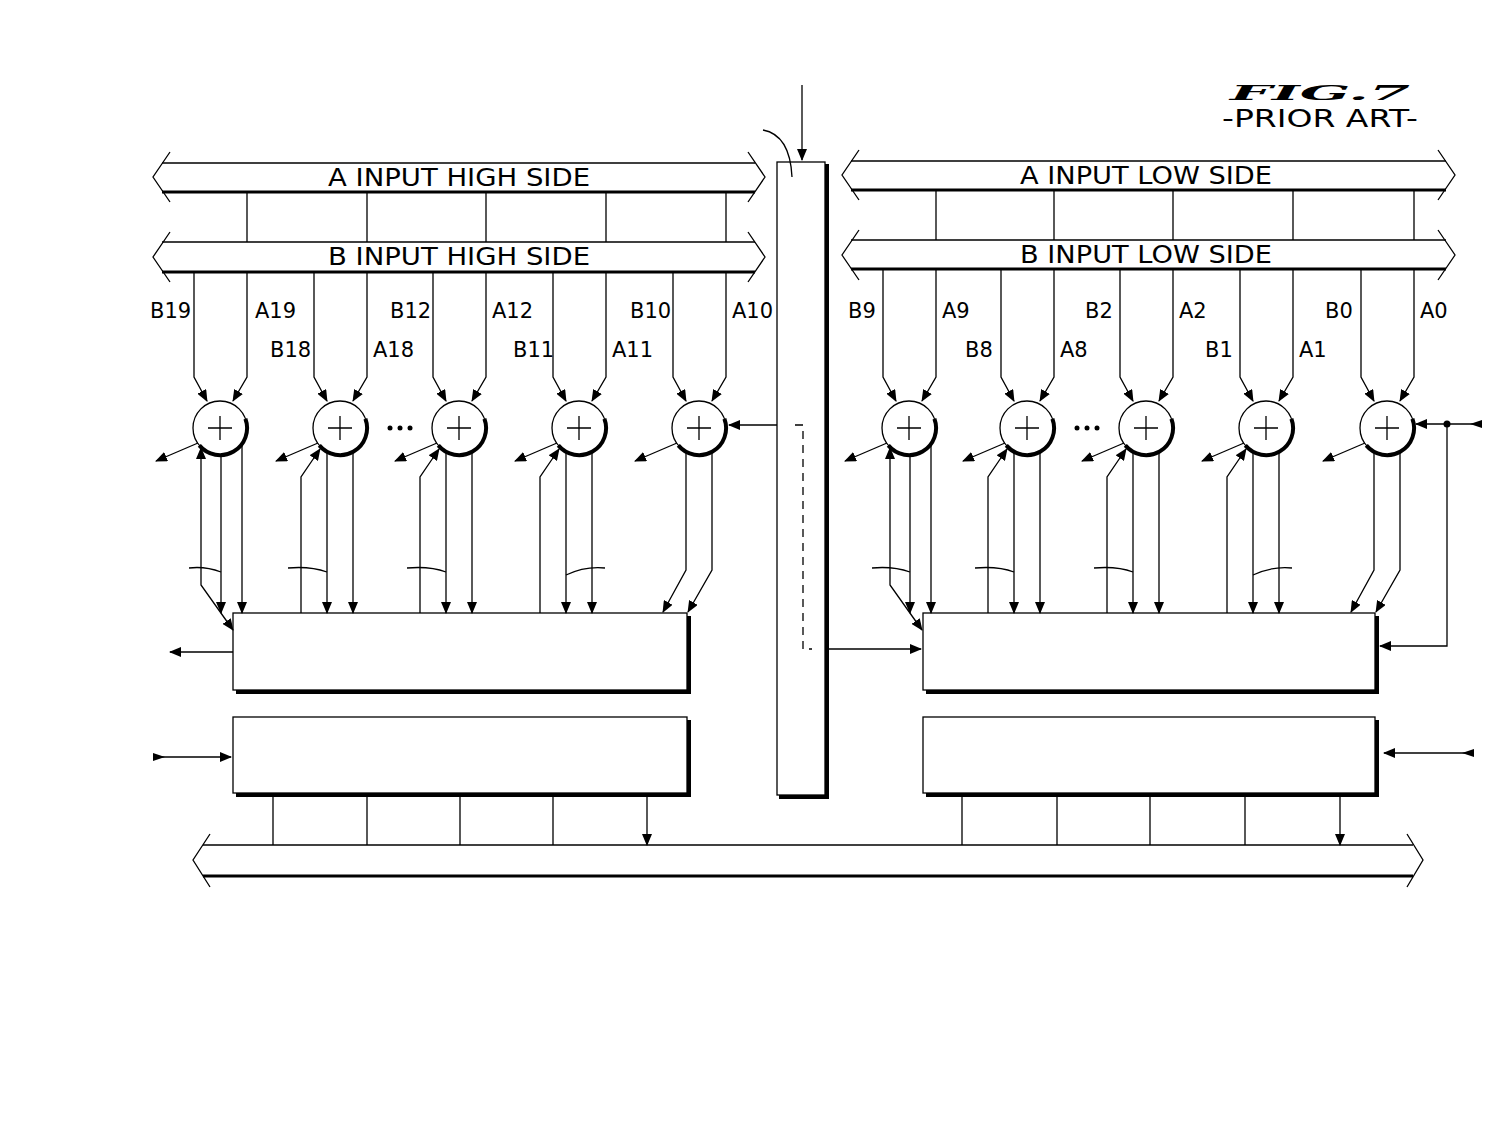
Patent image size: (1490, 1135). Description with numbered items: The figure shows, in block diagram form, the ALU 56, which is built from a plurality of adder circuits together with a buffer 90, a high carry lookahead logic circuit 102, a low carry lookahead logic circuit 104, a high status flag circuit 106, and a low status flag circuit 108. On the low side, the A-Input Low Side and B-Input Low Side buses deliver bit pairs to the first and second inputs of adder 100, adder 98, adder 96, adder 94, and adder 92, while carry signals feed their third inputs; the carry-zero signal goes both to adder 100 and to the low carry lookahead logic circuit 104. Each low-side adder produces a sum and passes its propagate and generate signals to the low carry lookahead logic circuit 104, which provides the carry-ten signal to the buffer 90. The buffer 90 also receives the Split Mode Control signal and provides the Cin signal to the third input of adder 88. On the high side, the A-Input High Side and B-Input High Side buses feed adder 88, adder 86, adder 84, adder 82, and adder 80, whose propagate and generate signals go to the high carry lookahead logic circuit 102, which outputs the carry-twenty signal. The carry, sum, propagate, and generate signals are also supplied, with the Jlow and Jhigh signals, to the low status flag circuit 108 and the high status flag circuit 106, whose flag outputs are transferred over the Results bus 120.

The ALU 56 is at (186, 828).
The adder 80 is at (238, 408).
The adder 82 is at (358, 408).
The adder 84 is at (477, 408).
The adder 86 is at (597, 408).
The adder 88 is at (718, 412).
The buffer 90 is at (818, 766).
The adder 92 is at (927, 408).
The adder 94 is at (1045, 408).
The adder 96 is at (1164, 408).
The adder 98 is at (1284, 408).
The adder 100 is at (1405, 406).
The high carry lookahead logic circuit 102 is at (664, 682).
The low carry lookahead logic circuit 104 is at (1358, 682).
The high status flag circuit 106 is at (664, 784).
The low status flag circuit 108 is at (1358, 785).
The Results bus 120 is at (849, 845).